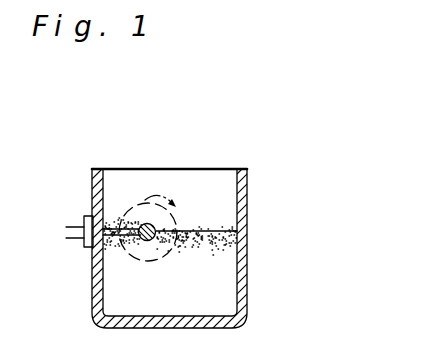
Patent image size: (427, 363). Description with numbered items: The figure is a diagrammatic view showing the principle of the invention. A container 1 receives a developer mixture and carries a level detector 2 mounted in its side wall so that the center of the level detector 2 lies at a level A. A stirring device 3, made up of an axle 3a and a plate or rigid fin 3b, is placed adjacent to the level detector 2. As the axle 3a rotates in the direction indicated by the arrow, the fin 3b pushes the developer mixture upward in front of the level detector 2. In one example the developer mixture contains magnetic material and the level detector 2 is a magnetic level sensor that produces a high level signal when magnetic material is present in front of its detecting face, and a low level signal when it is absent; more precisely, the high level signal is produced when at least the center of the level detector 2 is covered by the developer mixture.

The container 1 is at (247, 188).
The level detector 2 is at (84, 217).
The stirring device 3 is at (134, 207).
The axle 3a is at (147, 241).
The fin 3b is at (124, 236).
The level A is at (247, 231).